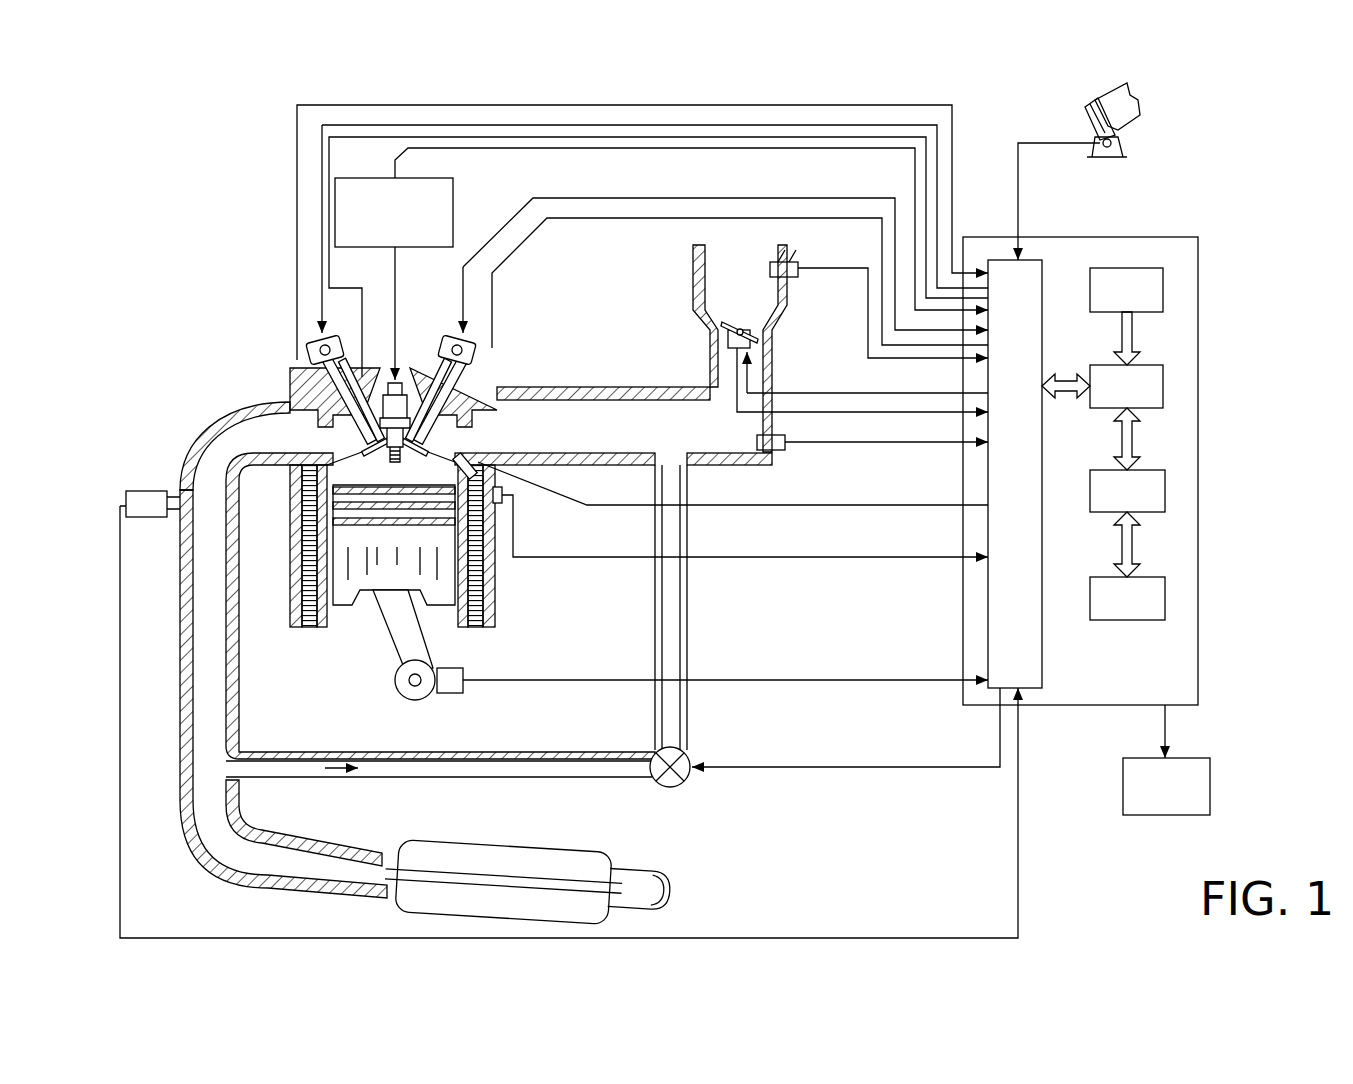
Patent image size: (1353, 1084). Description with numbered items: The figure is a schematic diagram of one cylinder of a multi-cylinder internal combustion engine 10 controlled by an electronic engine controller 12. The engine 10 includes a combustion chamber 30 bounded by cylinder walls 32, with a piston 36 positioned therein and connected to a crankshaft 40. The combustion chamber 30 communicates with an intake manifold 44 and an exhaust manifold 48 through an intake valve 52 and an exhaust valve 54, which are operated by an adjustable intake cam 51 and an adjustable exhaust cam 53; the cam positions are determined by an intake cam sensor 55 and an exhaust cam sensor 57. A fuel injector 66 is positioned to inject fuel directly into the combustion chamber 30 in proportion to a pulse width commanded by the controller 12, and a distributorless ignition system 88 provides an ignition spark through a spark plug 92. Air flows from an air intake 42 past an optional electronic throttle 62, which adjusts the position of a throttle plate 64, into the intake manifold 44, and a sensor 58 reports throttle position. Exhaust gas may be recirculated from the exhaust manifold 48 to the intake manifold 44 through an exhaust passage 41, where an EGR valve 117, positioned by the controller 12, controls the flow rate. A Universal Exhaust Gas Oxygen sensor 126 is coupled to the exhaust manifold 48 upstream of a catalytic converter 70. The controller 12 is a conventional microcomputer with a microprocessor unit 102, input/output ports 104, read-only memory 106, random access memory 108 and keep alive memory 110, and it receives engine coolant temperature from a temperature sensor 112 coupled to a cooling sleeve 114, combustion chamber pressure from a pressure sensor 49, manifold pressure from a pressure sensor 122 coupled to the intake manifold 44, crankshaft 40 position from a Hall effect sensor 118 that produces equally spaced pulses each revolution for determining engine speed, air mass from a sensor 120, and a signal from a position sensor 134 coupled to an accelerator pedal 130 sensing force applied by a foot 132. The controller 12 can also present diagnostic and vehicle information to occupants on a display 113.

The internal combustion engine 10 is at (225, 322).
The electronic engine controller 12 is at (1198, 240).
The combustion chamber 30 is at (390, 472).
The cylinder walls 32 is at (333, 613).
The piston 36 is at (375, 575).
The crankshaft 40 is at (396, 702).
The exhaust passage 41 is at (685, 648).
The air intake 42 is at (740, 348).
The intake manifold 44 is at (613, 426).
The exhaust manifold 48 is at (235, 446).
The pressure sensor 49 is at (362, 374).
The intake cam 51 is at (453, 340).
The intake valve 52 is at (440, 433).
The exhaust cam 53 is at (328, 342).
The exhaust valve 54 is at (330, 437).
The intake cam sensor 55 is at (473, 352).
The exhaust cam sensor 57 is at (313, 352).
The throttle position sensor 58 is at (727, 348).
The electronic throttle 62 is at (760, 328).
The throttle plate 64 is at (722, 323).
The fuel injector 66 is at (507, 467).
The catalytic converter 70 is at (405, 843).
The distributorless ignition system 88 is at (352, 178).
The spark plug 92 is at (397, 380).
The microprocessor unit 102 is at (1163, 385).
The input/output ports 104 is at (1042, 268).
The read-only memory 106 is at (1163, 290).
The random access memory 108 is at (1165, 492).
The keep alive memory 110 is at (1165, 597).
The temperature sensor 112 is at (510, 500).
The display 113 is at (1166, 786).
The cooling sleeve 114 is at (478, 577).
The EGR valve 117 is at (678, 788).
The Hall effect sensor 118 is at (447, 695).
The air mass sensor 120 is at (792, 262).
The pressure sensor 122 is at (775, 452).
The Universal Exhaust Gas Oxygen sensor 126 is at (126, 500).
The accelerator pedal 130 is at (1087, 115).
The foot 132 is at (1137, 104).
The position sensor 134 is at (1120, 145).